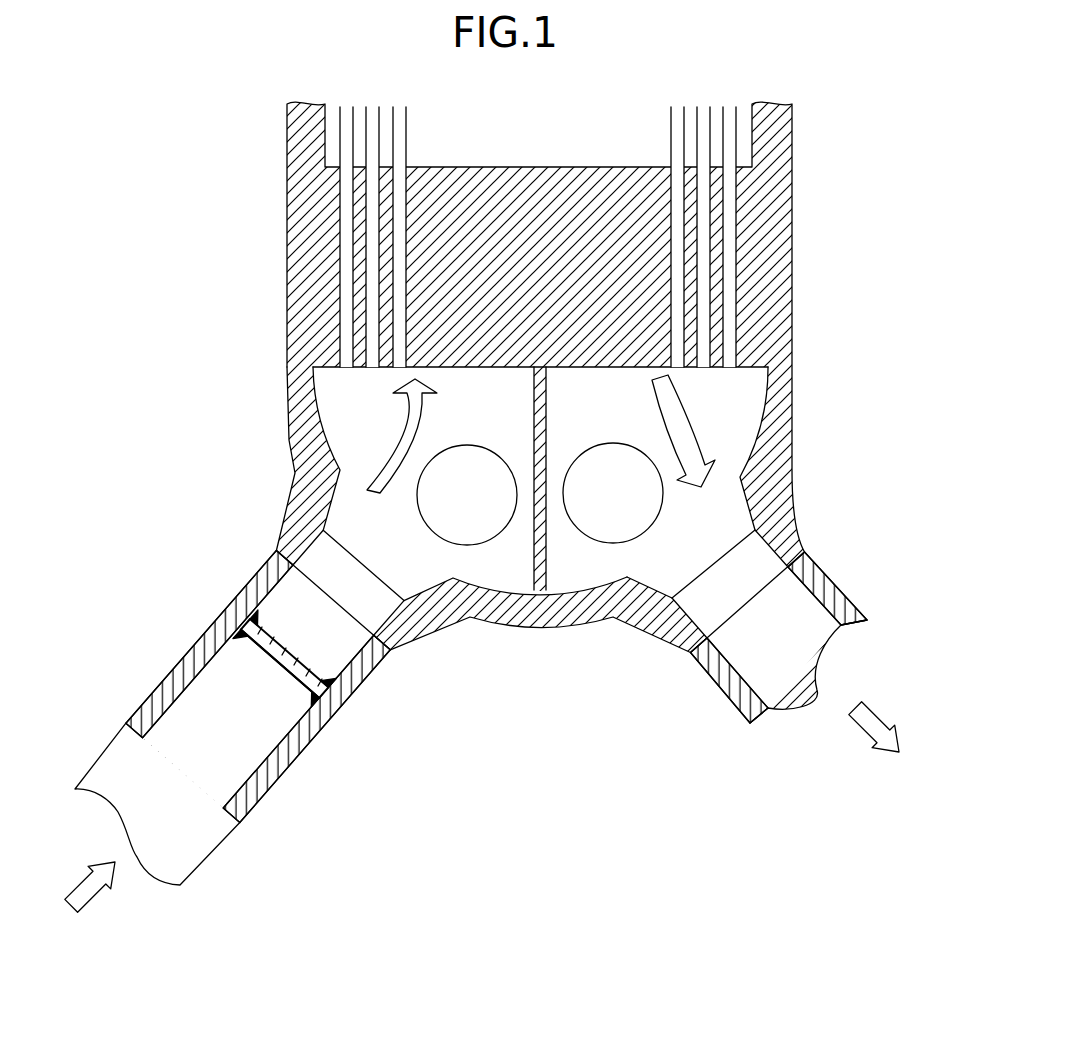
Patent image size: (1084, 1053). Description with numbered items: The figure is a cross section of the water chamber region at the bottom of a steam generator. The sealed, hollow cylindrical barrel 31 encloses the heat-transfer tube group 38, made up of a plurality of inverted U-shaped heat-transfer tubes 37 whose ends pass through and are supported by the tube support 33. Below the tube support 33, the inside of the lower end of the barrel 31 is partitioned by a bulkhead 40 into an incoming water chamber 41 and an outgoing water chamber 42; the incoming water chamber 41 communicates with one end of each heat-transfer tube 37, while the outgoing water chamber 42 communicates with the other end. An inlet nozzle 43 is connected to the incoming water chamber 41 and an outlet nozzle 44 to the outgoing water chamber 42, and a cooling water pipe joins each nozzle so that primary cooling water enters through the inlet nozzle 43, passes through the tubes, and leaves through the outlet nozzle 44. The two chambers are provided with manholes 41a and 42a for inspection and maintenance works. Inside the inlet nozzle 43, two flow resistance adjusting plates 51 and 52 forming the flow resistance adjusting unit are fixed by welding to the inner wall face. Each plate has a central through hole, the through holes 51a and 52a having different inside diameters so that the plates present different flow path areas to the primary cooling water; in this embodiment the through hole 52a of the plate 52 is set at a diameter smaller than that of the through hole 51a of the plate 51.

The barrel 31 is at (770, 143).
The tube support 33 is at (753, 317).
The heat-transfer tube 37 is at (347, 223).
The heat-transfer tube group 38 is at (335, 147).
The bulkhead 40 is at (547, 556).
The incoming water chamber 41 is at (347, 392).
The manhole 41a is at (447, 493).
The outgoing water chamber 42 is at (710, 407).
The manhole 42a is at (630, 512).
The inlet nozzle 43 is at (268, 795).
The outlet nozzle 44 is at (737, 695).
The flow resistance adjusting plate 51 is at (233, 627).
The through hole 51a is at (283, 668).
The flow resistance adjusting plate 52 is at (267, 645).
The through hole 52a is at (302, 647).